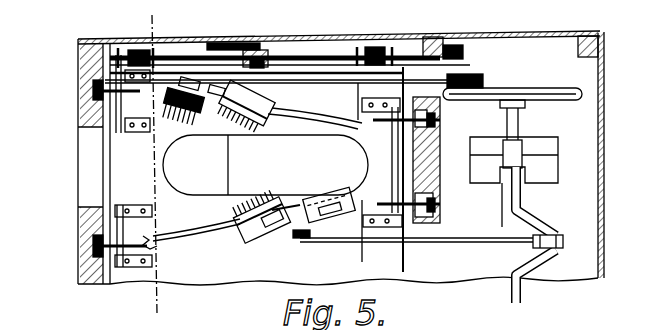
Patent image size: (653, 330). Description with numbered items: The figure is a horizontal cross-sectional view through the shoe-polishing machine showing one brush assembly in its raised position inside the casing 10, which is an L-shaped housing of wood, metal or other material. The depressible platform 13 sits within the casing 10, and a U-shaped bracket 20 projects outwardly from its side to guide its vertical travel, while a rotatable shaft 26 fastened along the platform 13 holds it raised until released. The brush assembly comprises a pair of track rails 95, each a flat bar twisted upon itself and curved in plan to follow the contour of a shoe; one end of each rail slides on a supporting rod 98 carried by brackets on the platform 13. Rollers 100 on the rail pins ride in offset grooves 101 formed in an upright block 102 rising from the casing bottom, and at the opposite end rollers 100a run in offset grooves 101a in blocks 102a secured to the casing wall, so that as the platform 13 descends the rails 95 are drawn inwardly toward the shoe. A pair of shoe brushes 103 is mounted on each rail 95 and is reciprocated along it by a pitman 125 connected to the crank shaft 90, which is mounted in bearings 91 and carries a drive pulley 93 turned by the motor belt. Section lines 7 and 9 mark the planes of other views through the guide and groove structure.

The section line 7- 7 is at (136, 306).
The section line 9- 9 is at (385, 253).
The casing 10 is at (78, 268).
The platform 13 is at (199, 285).
The U-shaped bracket 20 is at (272, 42).
The rotatable shaft 26 is at (186, 41).
The crank shaft 90 is at (544, 222).
The bearings 91 is at (522, 150).
The drive pulley 93 is at (511, 88).
The track rail 95 is at (297, 120).
The supporting rod 98 is at (397, 163).
The rollers 100 is at (440, 117).
The offset grooves 101 is at (440, 130).
The upright block 102 is at (444, 193).
The rollers 100a is at (88, 92).
The offset grooves 101a is at (93, 79).
The blocks 102a is at (90, 112).
The shoe brushes 103 is at (222, 125).
The pitman 125 is at (277, 79).